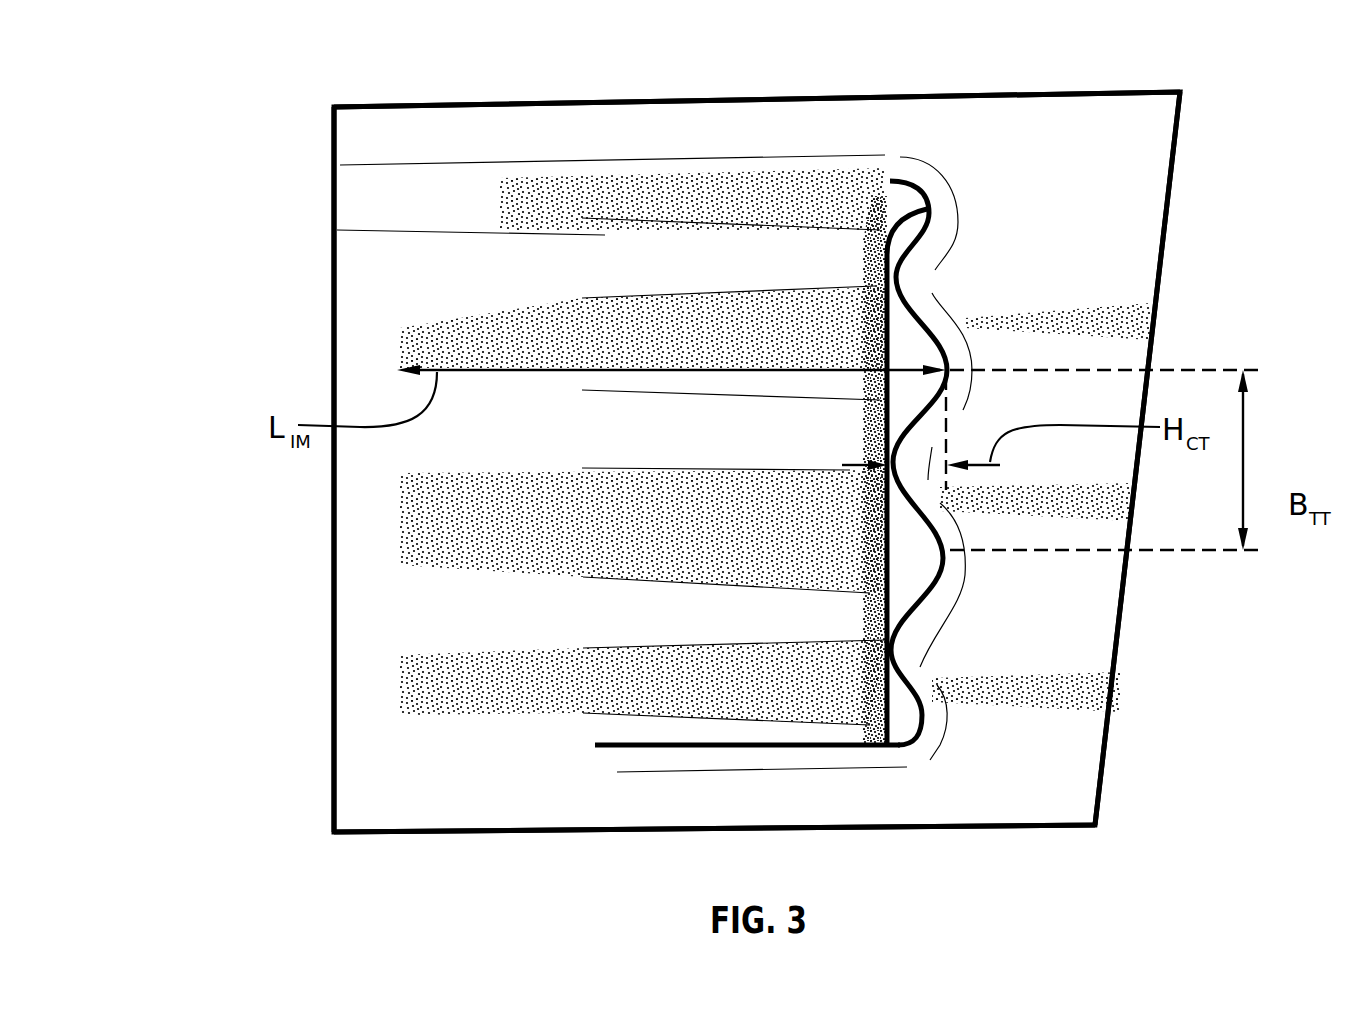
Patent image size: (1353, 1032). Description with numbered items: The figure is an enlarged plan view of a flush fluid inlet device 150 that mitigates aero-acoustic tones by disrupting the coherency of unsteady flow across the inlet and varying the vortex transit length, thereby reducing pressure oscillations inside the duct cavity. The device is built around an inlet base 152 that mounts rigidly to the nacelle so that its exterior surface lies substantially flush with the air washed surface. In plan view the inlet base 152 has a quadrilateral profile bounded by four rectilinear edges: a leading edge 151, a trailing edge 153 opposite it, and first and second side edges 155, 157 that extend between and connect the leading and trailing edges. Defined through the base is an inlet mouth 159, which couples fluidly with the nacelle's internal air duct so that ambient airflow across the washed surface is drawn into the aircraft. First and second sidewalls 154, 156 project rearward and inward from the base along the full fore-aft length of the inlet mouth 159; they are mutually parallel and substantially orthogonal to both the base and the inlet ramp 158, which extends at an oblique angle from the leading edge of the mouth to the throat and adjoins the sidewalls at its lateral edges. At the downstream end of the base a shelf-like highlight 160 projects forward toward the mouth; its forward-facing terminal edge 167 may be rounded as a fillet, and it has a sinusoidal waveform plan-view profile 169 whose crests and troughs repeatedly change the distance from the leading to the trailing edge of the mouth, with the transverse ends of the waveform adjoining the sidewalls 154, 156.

The fluid inlet device 150 is at (192, 56).
The leading edge 151 is at (333, 605).
The inlet base 152 is at (800, 136).
The trailing edge 153 is at (1160, 266).
The first sidewall 154 is at (716, 173).
The first side edge 155 is at (486, 106).
The second sidewall 156 is at (727, 737).
The second side edge 157 is at (488, 832).
The inlet ramp 158 is at (642, 677).
The inlet mouth 159 is at (600, 162).
The highlight 160 is at (908, 648).
The terminal edge 167 is at (903, 252).
The waveform plan-view profile 169 is at (900, 662).